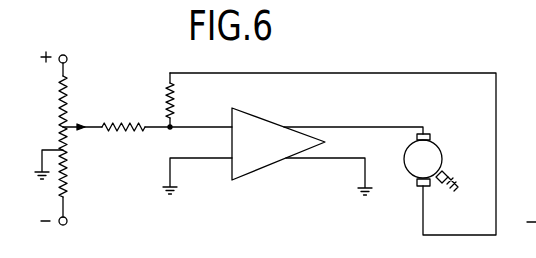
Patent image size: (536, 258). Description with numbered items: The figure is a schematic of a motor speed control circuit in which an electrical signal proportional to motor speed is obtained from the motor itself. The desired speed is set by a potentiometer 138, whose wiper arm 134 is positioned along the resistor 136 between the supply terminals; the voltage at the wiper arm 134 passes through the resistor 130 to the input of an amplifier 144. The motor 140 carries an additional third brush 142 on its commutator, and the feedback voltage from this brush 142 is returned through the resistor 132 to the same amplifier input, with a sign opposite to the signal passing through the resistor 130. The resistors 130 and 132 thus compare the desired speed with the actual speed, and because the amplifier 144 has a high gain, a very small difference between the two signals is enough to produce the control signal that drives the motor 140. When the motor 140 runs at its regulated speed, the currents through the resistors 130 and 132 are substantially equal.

The resistor 130 is at (112, 130).
The resistor 132 is at (167, 87).
The wiper arm 134 is at (88, 126).
The resistor 136 is at (70, 181).
The potentiometer 138 is at (68, 77).
The motor 140 is at (438, 146).
The third brush 142 is at (415, 184).
The amplifier 144 is at (255, 170).